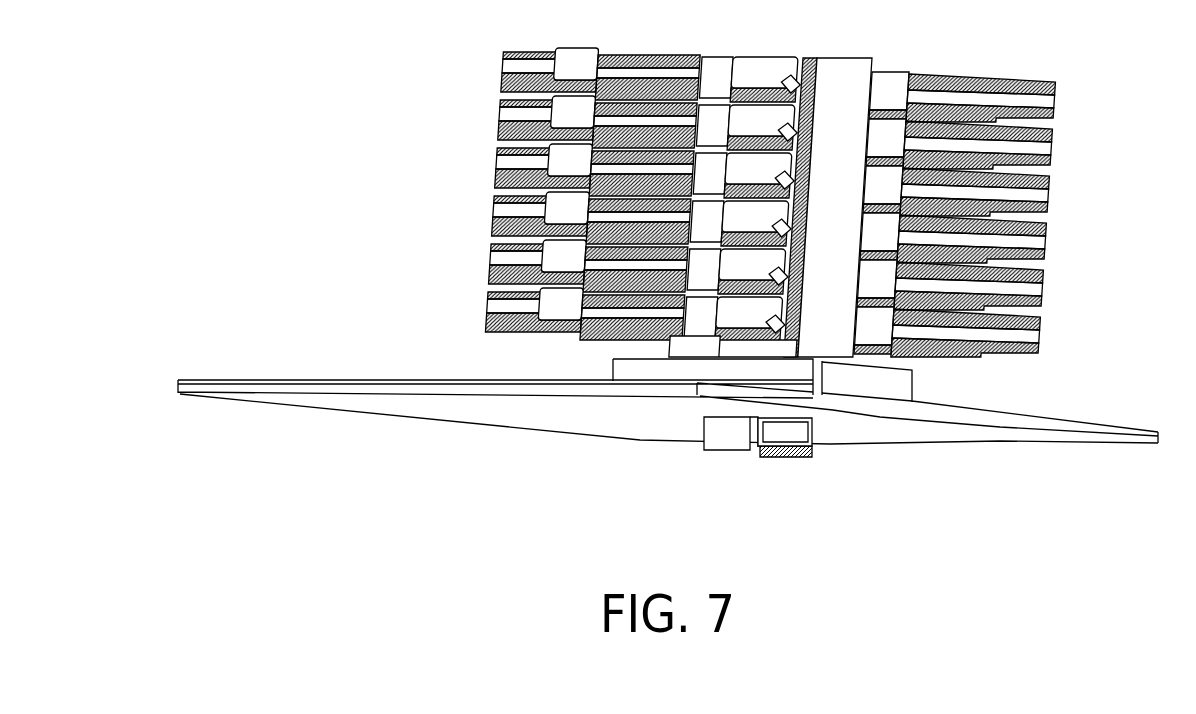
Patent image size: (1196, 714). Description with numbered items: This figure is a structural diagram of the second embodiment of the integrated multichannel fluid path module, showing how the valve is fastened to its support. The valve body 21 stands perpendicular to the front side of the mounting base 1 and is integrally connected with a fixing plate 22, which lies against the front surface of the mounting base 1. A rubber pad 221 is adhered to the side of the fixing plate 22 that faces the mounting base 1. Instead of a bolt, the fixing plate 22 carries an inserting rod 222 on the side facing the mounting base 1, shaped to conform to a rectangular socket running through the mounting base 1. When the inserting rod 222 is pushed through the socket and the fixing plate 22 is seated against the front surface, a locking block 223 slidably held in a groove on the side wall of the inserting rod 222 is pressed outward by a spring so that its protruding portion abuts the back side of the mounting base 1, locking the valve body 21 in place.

The mounting base 1 is at (432, 415).
The valve body 21 is at (847, 84).
The fixing plate 22 is at (912, 378).
The rubber pad 221 is at (912, 401).
The inserting rod 222 is at (730, 437).
The locking block 223 is at (800, 436).